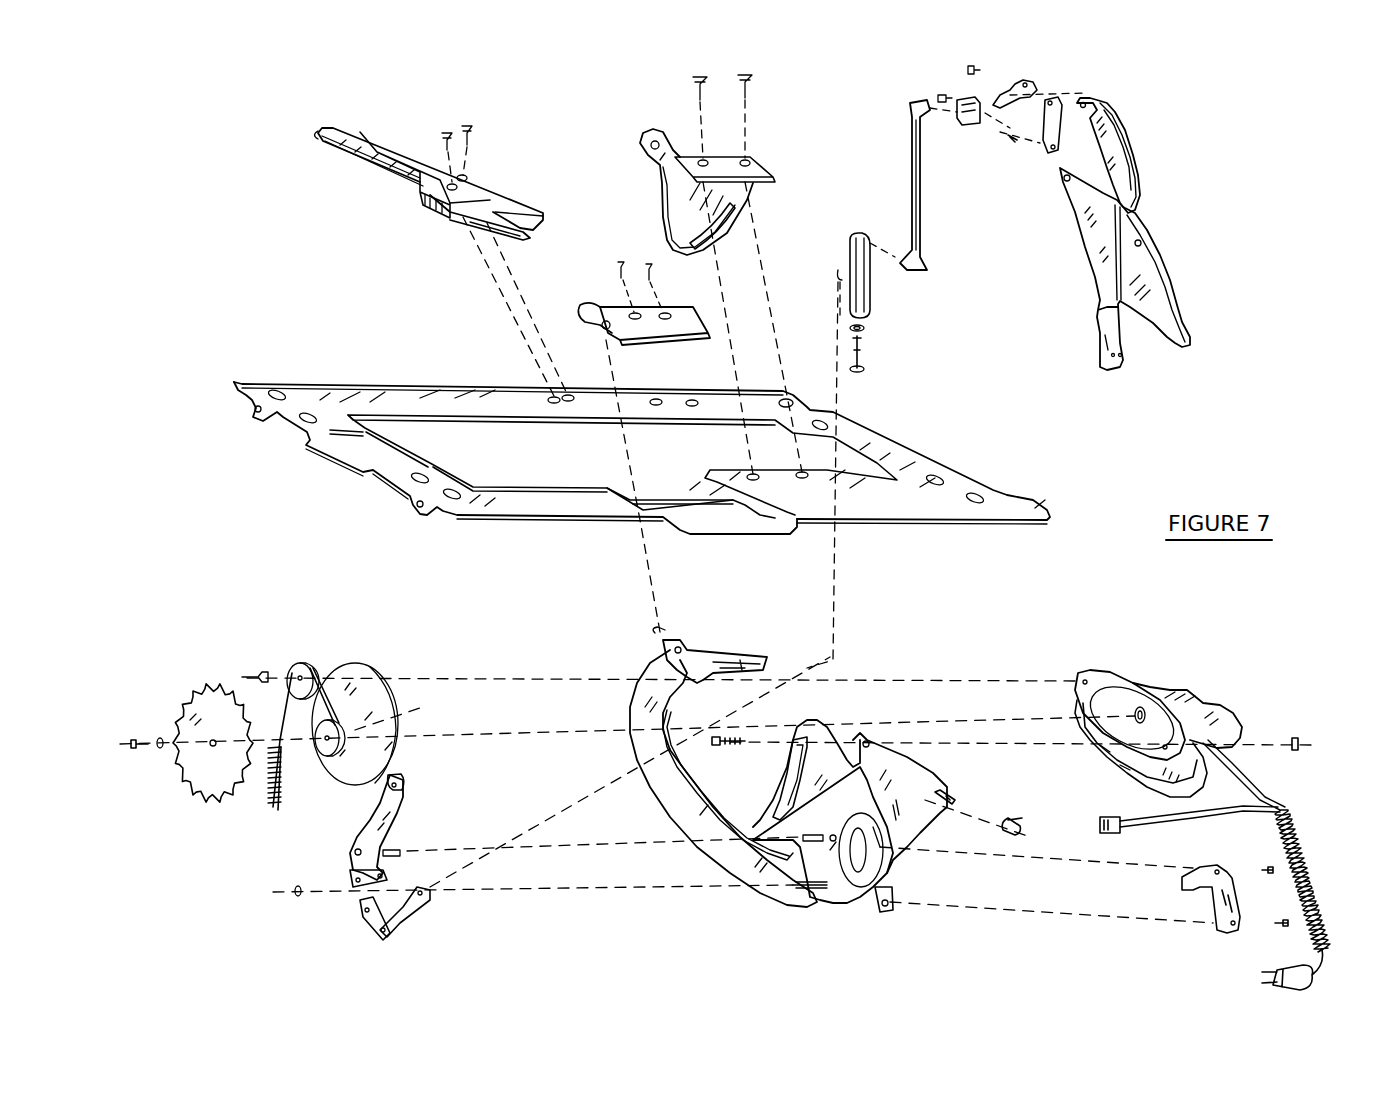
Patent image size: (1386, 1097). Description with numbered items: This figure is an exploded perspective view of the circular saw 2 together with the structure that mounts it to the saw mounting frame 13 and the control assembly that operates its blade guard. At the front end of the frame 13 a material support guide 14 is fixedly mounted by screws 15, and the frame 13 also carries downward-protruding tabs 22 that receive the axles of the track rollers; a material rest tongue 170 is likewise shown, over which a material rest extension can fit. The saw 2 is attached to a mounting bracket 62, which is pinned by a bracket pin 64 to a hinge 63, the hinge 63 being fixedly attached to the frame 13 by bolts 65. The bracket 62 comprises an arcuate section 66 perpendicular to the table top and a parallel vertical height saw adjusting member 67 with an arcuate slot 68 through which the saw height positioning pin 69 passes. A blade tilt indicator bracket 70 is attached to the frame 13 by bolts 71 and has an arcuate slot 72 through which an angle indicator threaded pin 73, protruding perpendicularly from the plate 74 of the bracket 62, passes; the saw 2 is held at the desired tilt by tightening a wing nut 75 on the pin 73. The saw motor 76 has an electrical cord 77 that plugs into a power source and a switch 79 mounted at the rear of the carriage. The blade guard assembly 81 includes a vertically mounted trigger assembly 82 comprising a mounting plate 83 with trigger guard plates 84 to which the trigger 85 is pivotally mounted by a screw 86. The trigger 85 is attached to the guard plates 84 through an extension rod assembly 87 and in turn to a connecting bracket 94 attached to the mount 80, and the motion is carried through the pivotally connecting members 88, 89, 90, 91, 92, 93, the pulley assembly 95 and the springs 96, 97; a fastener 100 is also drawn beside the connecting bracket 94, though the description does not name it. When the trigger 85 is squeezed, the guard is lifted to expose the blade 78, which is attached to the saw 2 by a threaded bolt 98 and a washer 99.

The circular saw 2 is at (1187, 676).
The frame 13 is at (333, 382).
The material support guide 14 is at (410, 153).
The screws 15 is at (468, 132).
The tabs 22 is at (253, 410).
The mounting bracket 62 is at (772, 918).
The hinge 63 is at (710, 293).
The bracket pin 64 is at (667, 640).
The bolts 65 is at (623, 260).
The arcuate section 66 is at (670, 820).
The vertical height saw adjusting member 67 is at (773, 798).
The arcuate slot 68 is at (787, 770).
The saw height positioning pin 69 is at (720, 748).
The blade tilt indicator bracket 70 is at (657, 137).
The bolts 71 is at (750, 80).
The arcuate slot 72 is at (693, 247).
The angle indicator threaded pin 73 is at (947, 800).
The plate 74 is at (923, 773).
The wing nut 75 is at (1013, 817).
The saw motor 76 is at (1227, 713).
The electrical cord 77 is at (1307, 830).
The blade 78 is at (205, 685).
The switch 79 is at (1108, 833).
The mount 80 is at (877, 912).
The blade guard assembly 81 is at (250, 846).
The trigger assembly 82 is at (1040, 188).
The mounting plate 83 is at (1093, 240).
The trigger guard plates 84 is at (1130, 165).
The trigger 85 is at (1023, 80).
The screw 86 is at (970, 70).
The extension rod assembly 87 is at (913, 190).
The pivotally connecting member 88 is at (410, 913).
The pivotally connecting member 89 is at (375, 933).
The pivotally connecting member 90 is at (367, 898).
The pivotally connecting member 91 is at (353, 867).
The pivotally connecting member 92 is at (387, 828).
The pivotally connecting member 93 is at (400, 785).
The connecting bracket 94 is at (850, 240).
The pulley assembly 95 is at (293, 650).
The spring 96 is at (370, 727).
The spring 97 is at (280, 795).
The threaded bolt 98 is at (138, 747).
The washer 99 is at (167, 730).
The screw 100 is at (867, 353).
The material rest tongue 170 is at (371, 143).